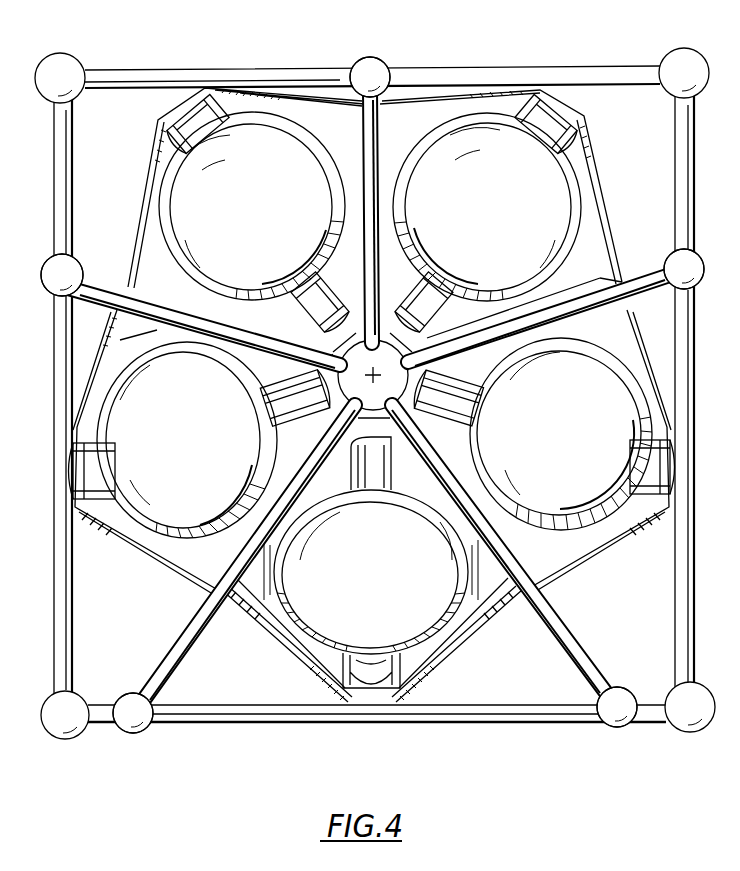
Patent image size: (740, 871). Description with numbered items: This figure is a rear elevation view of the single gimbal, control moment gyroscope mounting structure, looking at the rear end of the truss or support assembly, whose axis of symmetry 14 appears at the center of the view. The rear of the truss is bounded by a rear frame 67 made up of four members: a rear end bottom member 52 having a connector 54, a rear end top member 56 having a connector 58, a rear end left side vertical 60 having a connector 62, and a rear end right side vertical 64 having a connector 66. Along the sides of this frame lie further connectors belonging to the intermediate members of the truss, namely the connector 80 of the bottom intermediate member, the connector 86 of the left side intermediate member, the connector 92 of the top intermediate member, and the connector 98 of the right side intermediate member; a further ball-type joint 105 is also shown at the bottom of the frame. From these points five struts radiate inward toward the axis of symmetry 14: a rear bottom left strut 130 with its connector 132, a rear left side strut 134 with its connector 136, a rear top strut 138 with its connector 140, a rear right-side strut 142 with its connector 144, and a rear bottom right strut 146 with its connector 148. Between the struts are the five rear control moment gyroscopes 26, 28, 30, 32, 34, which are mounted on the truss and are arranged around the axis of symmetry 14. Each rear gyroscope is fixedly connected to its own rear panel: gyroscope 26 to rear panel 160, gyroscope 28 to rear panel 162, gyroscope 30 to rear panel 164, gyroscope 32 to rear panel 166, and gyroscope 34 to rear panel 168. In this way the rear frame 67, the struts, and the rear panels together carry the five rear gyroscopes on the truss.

The axis of symmetry 14 is at (408, 375).
The control moment gyroscope 26 is at (420, 607).
The control moment gyroscope 28 is at (583, 484).
The control moment gyroscope 30 is at (550, 198).
The control moment gyroscope 32 is at (192, 200).
The control moment gyroscope 34 is at (210, 495).
The rear end bottom member 52 is at (225, 703).
The connector 54 is at (688, 726).
The rear end top member 56 is at (143, 77).
The connector 58 is at (57, 65).
The rear end left side vertical 60 is at (696, 555).
The connector 62 is at (666, 56).
The rear end right side vertical 64 is at (53, 380).
The connector 66 is at (48, 702).
The rear frame 67 is at (698, 180).
The connector 80 is at (622, 730).
The connector 86 is at (699, 285).
The connector 92 is at (381, 60).
The connector 98 is at (47, 267).
The ball joint 105 is at (135, 728).
The rear bottom left strut 130 is at (571, 638).
The connector 132 is at (618, 687).
The rear left side strut 134 is at (638, 283).
The connector 136 is at (700, 255).
The rear top strut 138 is at (367, 120).
The connector 140 is at (362, 58).
The rear right-side strut 142 is at (107, 288).
The connector 144 is at (88, 230).
The rear bottom right strut 146 is at (182, 638).
The connector 148 is at (130, 690).
The rear panel 160 is at (277, 638).
The rear panel 162 is at (575, 562).
The rear panel 164 is at (600, 240).
The rear panel 166 is at (157, 147).
The rear panel 168 is at (108, 333).